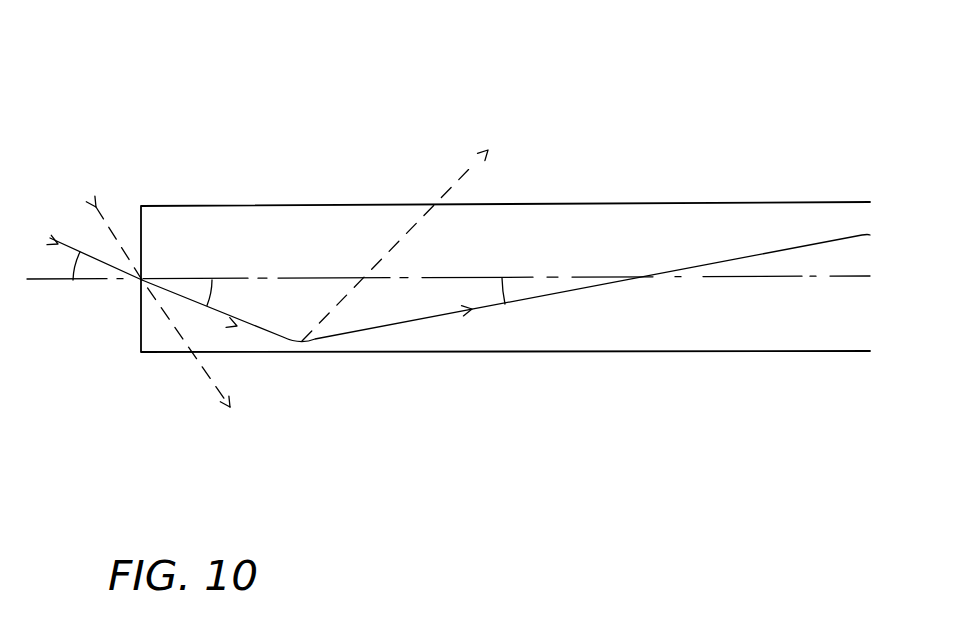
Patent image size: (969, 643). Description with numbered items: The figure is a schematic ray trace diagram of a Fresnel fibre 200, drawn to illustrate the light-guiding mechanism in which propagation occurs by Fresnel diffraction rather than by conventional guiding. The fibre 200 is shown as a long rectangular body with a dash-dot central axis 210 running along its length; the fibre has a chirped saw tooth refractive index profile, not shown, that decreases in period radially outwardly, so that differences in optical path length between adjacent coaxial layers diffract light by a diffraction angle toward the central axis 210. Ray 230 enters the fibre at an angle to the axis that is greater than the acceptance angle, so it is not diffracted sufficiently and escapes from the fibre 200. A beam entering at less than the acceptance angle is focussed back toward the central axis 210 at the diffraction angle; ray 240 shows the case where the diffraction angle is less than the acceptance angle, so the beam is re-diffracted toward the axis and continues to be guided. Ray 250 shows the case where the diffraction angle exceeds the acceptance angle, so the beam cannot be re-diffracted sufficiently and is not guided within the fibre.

The Fresnel fibre 200 is at (401, 148).
The central axis 210 is at (317, 277).
The ray 230 is at (80, 181).
The ray 240 is at (753, 253).
The ray 250 is at (463, 189).